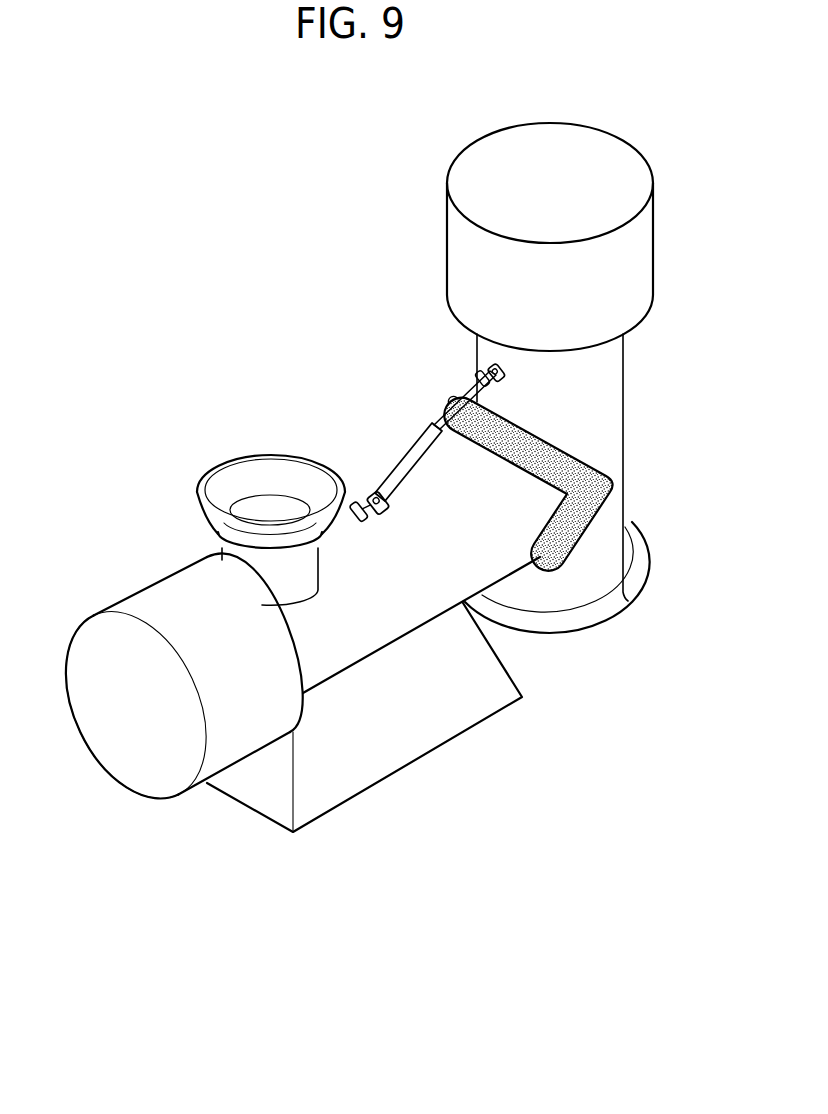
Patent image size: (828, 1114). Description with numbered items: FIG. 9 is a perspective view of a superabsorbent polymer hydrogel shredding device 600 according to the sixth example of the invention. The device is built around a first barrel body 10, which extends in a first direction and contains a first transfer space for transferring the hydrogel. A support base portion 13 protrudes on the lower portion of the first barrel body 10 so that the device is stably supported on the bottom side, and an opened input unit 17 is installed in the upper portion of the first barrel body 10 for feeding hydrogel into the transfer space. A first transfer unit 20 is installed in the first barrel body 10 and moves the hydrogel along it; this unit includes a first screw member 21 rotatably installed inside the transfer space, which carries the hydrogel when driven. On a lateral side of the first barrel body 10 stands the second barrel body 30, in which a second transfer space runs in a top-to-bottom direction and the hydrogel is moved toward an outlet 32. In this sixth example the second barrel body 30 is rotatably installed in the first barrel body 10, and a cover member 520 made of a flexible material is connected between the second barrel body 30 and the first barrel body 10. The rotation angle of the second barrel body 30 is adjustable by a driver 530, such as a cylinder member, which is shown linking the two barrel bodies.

The hydrogel shredding device 600 is at (175, 298).
The second barrel body 30 is at (497, 352).
The outlet 32 is at (615, 612).
The cover member 520 is at (553, 453).
The driver 530 is at (413, 455).
The input unit 17 is at (268, 468).
The first transfer unit 20 is at (103, 783).
The first screw member 21 is at (237, 730).
The first barrel body 10 is at (385, 602).
The support base portion 13 is at (465, 710).